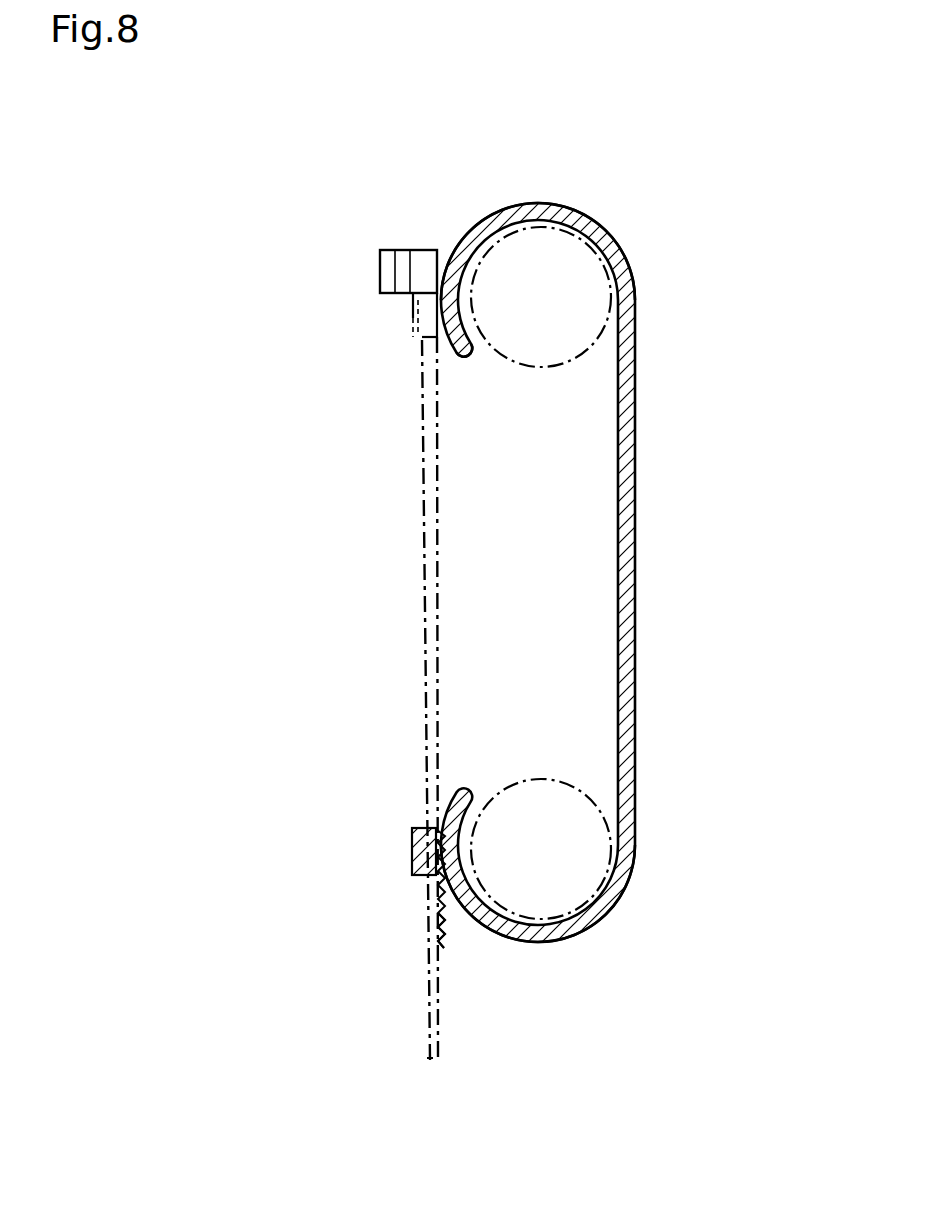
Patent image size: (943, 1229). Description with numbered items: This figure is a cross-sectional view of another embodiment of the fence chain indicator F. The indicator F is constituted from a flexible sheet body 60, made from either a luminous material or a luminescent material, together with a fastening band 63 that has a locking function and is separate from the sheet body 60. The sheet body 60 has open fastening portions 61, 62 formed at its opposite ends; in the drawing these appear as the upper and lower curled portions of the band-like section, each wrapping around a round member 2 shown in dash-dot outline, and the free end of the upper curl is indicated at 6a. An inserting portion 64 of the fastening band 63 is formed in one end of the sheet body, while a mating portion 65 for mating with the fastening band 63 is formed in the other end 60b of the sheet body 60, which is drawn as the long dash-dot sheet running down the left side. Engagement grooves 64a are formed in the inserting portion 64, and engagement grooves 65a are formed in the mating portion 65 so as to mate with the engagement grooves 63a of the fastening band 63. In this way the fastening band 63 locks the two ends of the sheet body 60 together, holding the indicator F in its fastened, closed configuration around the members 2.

The fence chain indicator F is at (623, 197).
The roller 2 is at (578, 333).
The flexible sheet body 60 is at (636, 541).
The other end of sheet body 60b is at (460, 720).
The open fastening portion 61 is at (583, 213).
The open fastening portion 62 is at (577, 935).
The fastening band 63 is at (404, 250).
The engagement grooves of fastening band 63a is at (447, 927).
The inserting portion 64 is at (412, 320).
The engagement grooves 64a is at (420, 338).
The mating portion 65 is at (410, 853).
The engagement grooves 65a is at (428, 887).
The belt end hook 6a is at (465, 354).